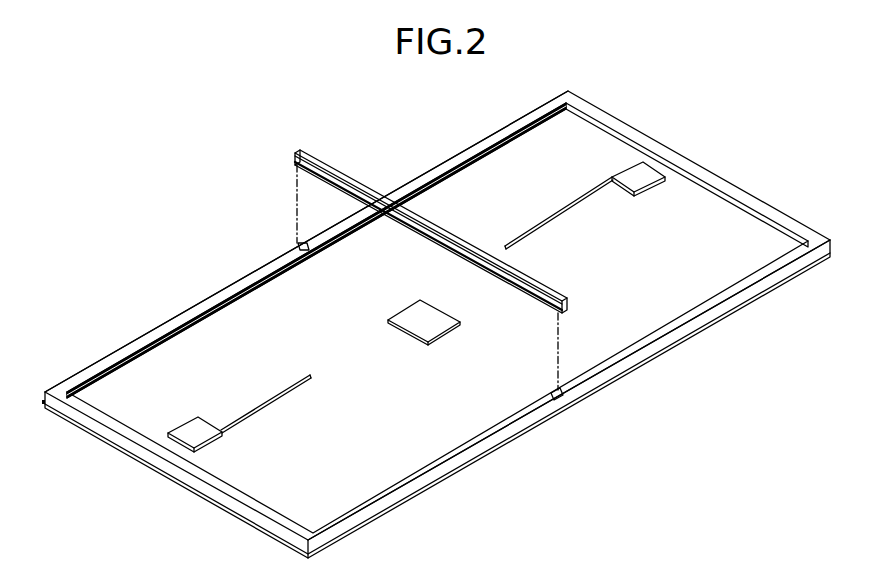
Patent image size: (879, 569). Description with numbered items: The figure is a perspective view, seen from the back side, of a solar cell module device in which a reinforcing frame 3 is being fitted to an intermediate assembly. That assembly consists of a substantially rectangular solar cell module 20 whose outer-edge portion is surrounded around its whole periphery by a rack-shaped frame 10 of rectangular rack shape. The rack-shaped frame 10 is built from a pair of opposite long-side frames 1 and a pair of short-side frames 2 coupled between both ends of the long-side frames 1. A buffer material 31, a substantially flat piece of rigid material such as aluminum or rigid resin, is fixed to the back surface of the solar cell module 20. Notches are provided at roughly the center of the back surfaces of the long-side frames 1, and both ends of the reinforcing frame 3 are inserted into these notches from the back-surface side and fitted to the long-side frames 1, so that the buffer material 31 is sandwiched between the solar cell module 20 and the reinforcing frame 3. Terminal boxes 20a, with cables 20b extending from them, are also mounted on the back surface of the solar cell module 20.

The long-side frame 1 is at (179, 313).
The short-side frame 2 is at (698, 165).
The reinforcing frame 3 is at (452, 232).
The rack-shaped frame 10 is at (448, 159).
The solar cell module 20 is at (350, 494).
The terminal box 20a is at (648, 163).
The cable 20b is at (548, 217).
The buffer material 31 is at (403, 315).